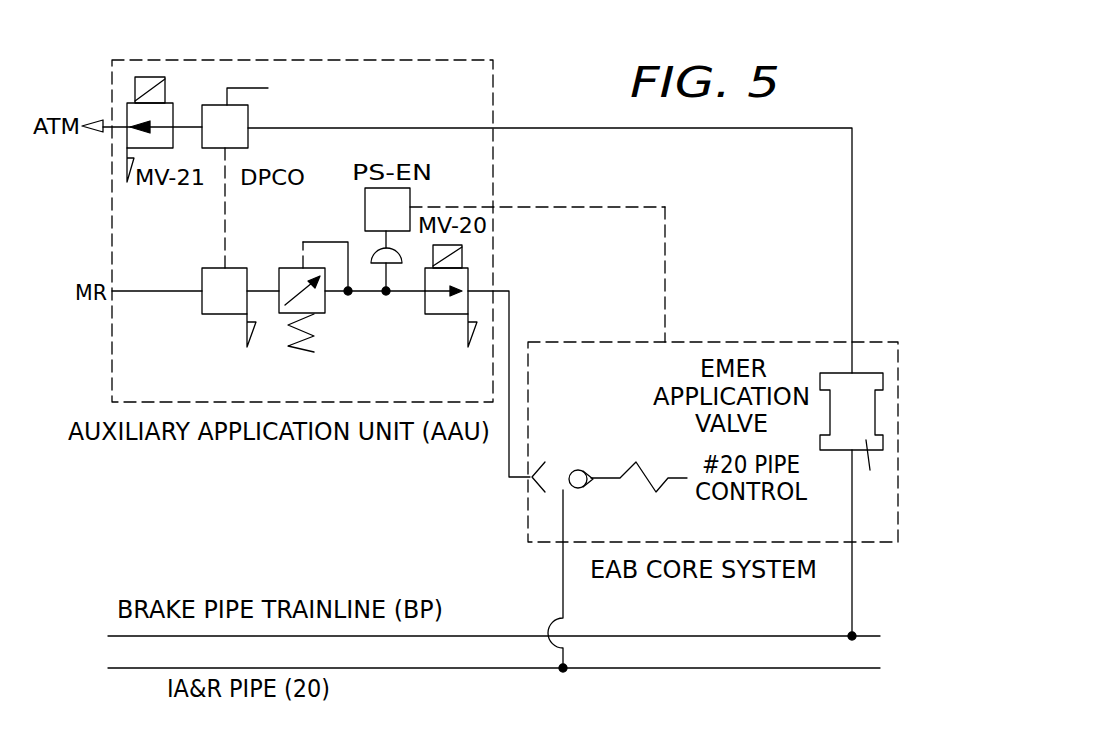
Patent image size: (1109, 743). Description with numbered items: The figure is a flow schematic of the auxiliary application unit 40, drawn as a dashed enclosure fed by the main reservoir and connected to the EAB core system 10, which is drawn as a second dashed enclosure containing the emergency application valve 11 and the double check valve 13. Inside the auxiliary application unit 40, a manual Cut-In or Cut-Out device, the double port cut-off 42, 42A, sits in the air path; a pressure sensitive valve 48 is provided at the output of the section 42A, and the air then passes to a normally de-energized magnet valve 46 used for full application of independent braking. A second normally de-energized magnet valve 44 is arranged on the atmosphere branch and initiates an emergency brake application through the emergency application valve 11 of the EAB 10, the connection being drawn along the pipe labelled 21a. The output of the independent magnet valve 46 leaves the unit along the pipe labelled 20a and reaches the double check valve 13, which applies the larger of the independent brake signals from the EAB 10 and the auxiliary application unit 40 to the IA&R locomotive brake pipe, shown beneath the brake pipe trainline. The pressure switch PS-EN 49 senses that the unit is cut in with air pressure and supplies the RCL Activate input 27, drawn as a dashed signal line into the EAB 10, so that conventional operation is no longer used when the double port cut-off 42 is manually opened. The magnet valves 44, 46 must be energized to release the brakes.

The EAB system 10 is at (880, 340).
The emergency application valve 11 is at (879, 469).
The double check valve 13 is at (583, 466).
The RCL Activate input 27 is at (665, 297).
The auxiliary application unit 40 is at (495, 62).
The double port cut-off 42 is at (218, 105).
The double port cut-off section 42A is at (207, 302).
The emergency magnet valve 44 is at (143, 77).
The independent magnet valve 46 is at (462, 258).
The pressure sensitive valve 48 is at (288, 268).
The pressure switch PS-EN 49 is at (365, 207).
The #21a pipe 21a is at (550, 237).
The #20a pipe 20a is at (518, 379).